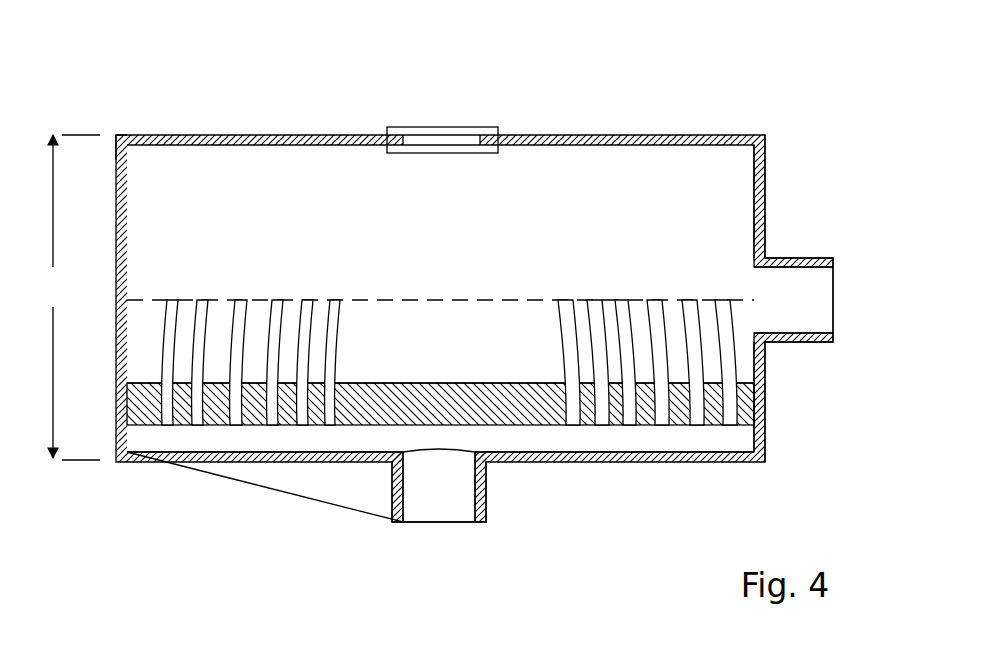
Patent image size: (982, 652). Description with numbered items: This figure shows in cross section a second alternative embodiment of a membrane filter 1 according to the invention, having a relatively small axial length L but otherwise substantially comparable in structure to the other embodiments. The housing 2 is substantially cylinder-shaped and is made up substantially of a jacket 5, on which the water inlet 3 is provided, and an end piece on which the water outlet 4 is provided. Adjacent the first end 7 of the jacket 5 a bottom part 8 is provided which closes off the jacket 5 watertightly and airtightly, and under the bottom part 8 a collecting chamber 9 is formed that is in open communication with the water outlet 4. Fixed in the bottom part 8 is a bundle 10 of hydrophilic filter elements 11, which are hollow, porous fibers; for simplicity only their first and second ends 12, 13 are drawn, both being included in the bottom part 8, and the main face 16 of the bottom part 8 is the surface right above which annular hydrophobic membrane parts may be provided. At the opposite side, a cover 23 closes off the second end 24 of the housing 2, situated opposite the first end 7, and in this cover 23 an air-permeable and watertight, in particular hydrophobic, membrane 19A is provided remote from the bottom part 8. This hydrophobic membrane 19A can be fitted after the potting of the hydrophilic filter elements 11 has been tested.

The membrane filter 1 is at (838, 183).
The housing 2 is at (775, 108).
The water inlet 3 is at (822, 304).
The water outlet 4 is at (435, 497).
The jacket 5 is at (758, 168).
The first end 7 is at (782, 357).
The bottom part 8 is at (440, 408).
The collecting chamber 9 is at (723, 435).
The bundle 10 is at (707, 275).
The hydrophilic filter elements 11 is at (632, 305).
The first end 12 is at (228, 420).
The second end 13 is at (658, 422).
The main face 16 is at (353, 380).
The hydrophobic membrane 19A is at (445, 143).
The cover 23 is at (187, 135).
The second end 24 is at (108, 118).
The axial length L is at (73, 297).